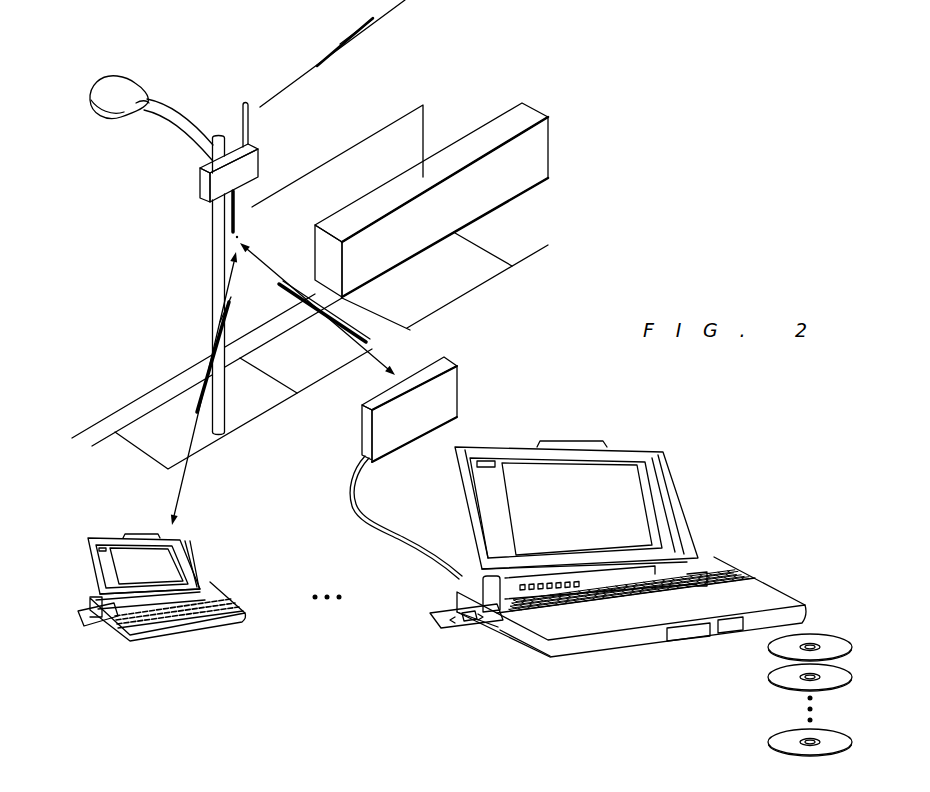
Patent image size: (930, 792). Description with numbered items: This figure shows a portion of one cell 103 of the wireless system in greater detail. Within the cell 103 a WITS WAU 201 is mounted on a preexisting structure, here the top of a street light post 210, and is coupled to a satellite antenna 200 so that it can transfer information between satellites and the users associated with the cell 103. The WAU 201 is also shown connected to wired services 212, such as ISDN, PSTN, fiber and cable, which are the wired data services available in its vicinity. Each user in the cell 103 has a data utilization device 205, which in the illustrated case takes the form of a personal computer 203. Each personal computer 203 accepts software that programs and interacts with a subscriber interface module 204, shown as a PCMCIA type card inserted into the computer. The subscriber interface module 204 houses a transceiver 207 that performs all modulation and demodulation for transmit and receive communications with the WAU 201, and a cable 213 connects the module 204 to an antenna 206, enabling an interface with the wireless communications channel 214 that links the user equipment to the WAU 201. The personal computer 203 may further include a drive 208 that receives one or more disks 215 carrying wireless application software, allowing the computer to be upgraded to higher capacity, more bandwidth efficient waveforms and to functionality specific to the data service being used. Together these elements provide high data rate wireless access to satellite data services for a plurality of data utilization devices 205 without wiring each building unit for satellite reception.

The cell 103 is at (228, 61).
The satellite antenna 200 is at (250, 125).
The WITS WAU 201 is at (202, 183).
The street light post 210 is at (214, 263).
The wired services 212 is at (529, 105).
The wireless communications channel 214 is at (385, 364).
The antenna 206 is at (453, 384).
The cable 213 is at (392, 531).
The subscriber interface module 204 is at (438, 618).
The transceiver 207 is at (473, 628).
The drive 208 is at (730, 634).
The personal computer 203 is at (633, 490).
The data utilization device 205 is at (641, 433).
The disks 215 is at (825, 638).